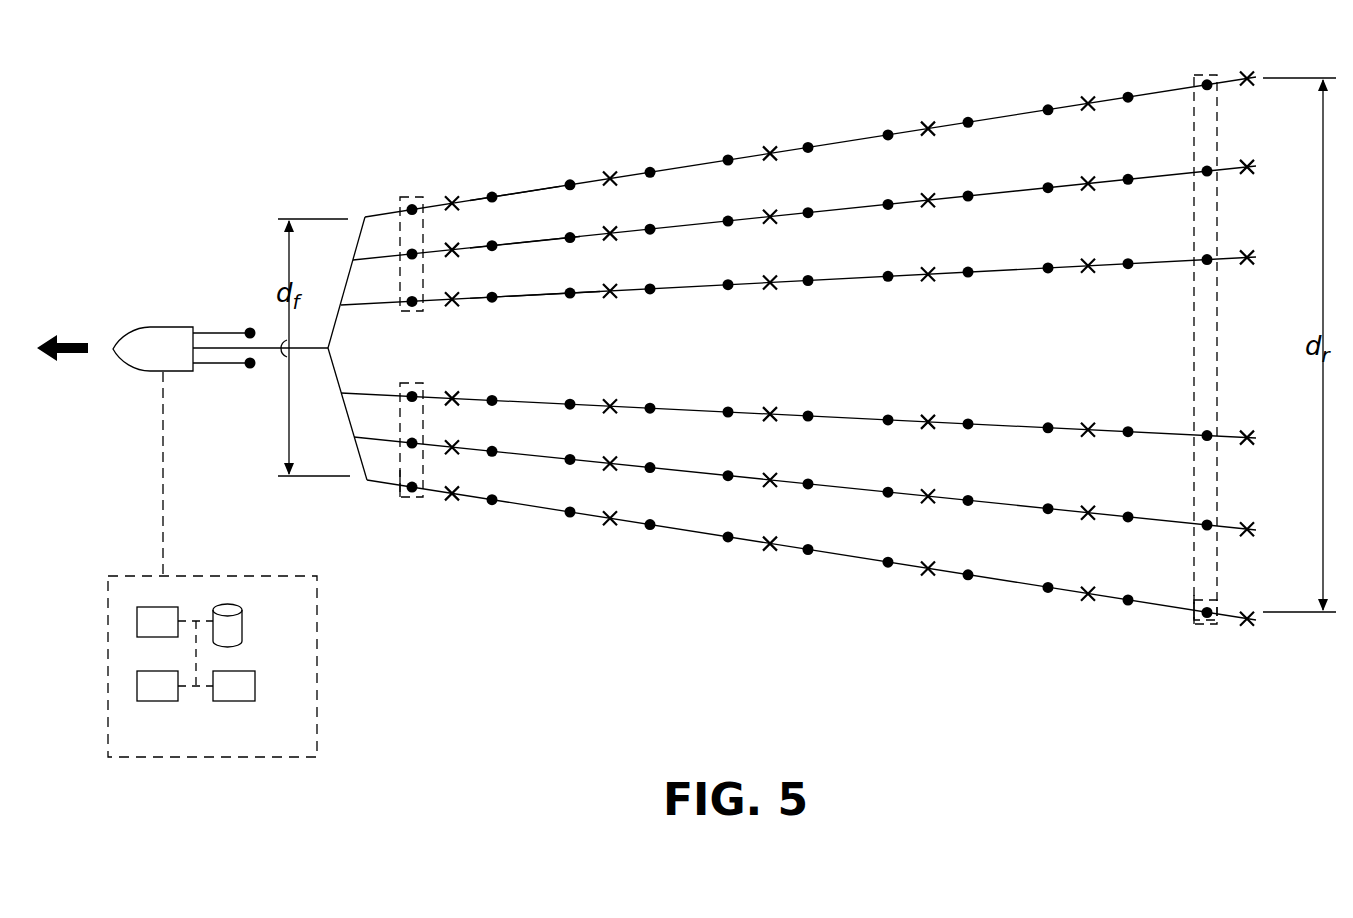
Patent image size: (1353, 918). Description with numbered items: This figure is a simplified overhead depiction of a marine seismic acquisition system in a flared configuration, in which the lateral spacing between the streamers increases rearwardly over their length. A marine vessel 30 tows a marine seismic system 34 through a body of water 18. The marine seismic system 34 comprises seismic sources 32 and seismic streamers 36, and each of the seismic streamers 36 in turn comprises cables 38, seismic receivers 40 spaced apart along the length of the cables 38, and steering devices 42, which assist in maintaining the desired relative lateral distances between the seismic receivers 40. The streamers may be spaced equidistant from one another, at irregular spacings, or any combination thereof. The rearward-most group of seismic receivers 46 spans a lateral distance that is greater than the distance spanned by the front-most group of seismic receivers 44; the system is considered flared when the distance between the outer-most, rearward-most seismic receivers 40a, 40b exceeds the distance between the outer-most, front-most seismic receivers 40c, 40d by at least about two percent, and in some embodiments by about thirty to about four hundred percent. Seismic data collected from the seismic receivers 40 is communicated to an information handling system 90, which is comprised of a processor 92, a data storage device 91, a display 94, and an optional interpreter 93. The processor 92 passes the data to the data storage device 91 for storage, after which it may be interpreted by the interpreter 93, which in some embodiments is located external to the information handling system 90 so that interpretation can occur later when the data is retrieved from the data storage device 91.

The body of water 18 is at (119, 433).
The marine vessel 30 is at (150, 327).
The seismic sources 32 is at (250, 330).
The marine seismic system 34 is at (534, 132).
The seismic streamers 36 is at (366, 296).
The cables 38 is at (548, 295).
The seismic receivers 40 is at (646, 286).
The outer-most rearward-most seismic receiver 40a is at (1205, 73).
The outer-most rearward-most seismic receiver 40b is at (1207, 623).
The outer-most front-most seismic receiver 40c is at (411, 201).
The outer-most front-most seismic receiver 40d is at (411, 498).
The steering devices 42 is at (762, 275).
The front-most group of seismic receivers 44 is at (397, 473).
The rearward-most group of seismic receivers 46 is at (1192, 597).
The information handling system 90 is at (257, 666).
The data storage device 91 is at (242, 628).
The processor 92 is at (163, 607).
The interpreter 93 is at (163, 701).
The display 94 is at (255, 685).